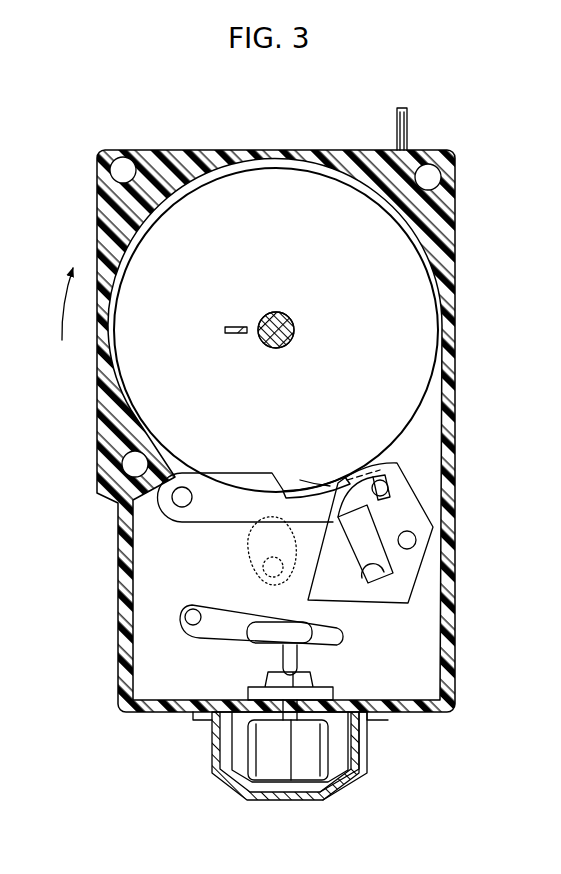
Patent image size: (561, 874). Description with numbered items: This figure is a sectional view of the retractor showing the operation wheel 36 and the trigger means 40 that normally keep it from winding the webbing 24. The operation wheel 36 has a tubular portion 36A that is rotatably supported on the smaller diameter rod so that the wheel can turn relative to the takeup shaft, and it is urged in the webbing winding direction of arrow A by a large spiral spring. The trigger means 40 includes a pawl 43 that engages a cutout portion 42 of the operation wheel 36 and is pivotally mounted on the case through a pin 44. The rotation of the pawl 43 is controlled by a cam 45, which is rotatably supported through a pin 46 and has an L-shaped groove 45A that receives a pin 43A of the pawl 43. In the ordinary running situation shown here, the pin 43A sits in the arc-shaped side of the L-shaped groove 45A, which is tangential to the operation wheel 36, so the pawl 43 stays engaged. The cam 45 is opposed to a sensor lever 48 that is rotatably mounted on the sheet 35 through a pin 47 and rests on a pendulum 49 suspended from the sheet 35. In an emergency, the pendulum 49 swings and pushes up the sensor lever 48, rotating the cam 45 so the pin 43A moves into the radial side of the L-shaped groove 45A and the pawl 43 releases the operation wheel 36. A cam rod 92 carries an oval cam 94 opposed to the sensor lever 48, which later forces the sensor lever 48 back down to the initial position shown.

The webbing 24 is at (408, 115).
The sheet 35 is at (145, 590).
The operation wheel 36 is at (425, 318).
The tubular portion 36A is at (290, 285).
The trigger means 40 is at (304, 482).
The cutout portion 42 is at (262, 474).
The pawl 43 is at (216, 522).
The pin 43A is at (392, 482).
The pin 44 is at (181, 506).
The cam 45 is at (395, 587).
The L-shaped groove 45A is at (380, 583).
The pin 46 is at (414, 539).
The pin 47 is at (189, 622).
The sensor lever 48 is at (212, 605).
The pendulum 49 is at (272, 680).
The cam rod 92 is at (266, 584).
The oval cam 94 is at (243, 560).
The arrow A is at (62, 310).